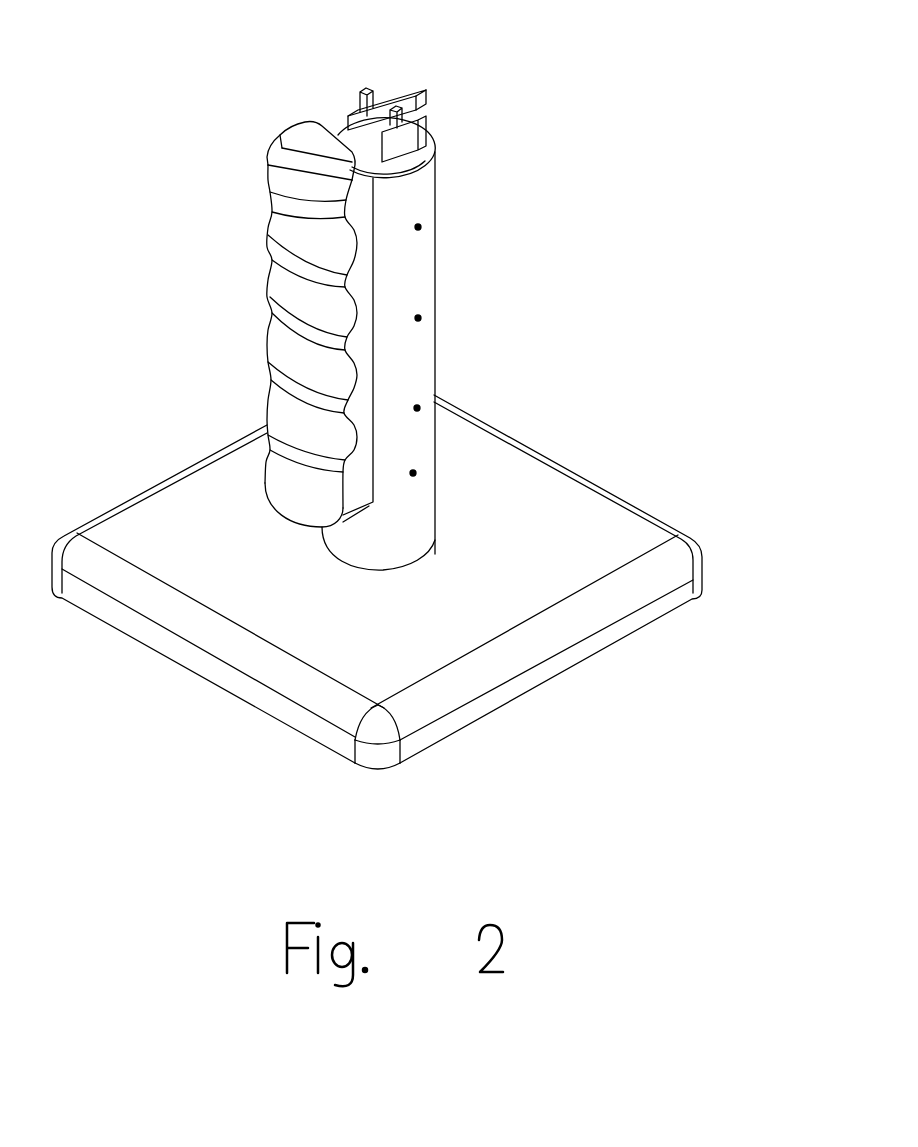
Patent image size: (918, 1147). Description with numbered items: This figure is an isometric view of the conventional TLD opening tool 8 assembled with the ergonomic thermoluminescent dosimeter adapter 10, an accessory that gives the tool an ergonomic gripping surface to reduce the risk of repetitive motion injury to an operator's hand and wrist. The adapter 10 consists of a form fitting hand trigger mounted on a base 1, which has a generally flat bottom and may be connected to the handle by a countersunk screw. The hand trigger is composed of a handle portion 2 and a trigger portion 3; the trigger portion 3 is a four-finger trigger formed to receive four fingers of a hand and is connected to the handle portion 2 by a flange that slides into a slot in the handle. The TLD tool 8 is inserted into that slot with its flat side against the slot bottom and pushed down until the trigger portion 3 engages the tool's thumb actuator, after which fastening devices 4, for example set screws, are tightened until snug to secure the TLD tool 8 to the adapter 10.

The base 1 is at (557, 638).
The handle portion 2 is at (398, 527).
The trigger portion 3 is at (298, 298).
The fastening device 4 is at (421, 316).
The TLD tool 8 is at (420, 128).
The ergonomic thermoluminescent dosimeter adapter 10 is at (408, 350).